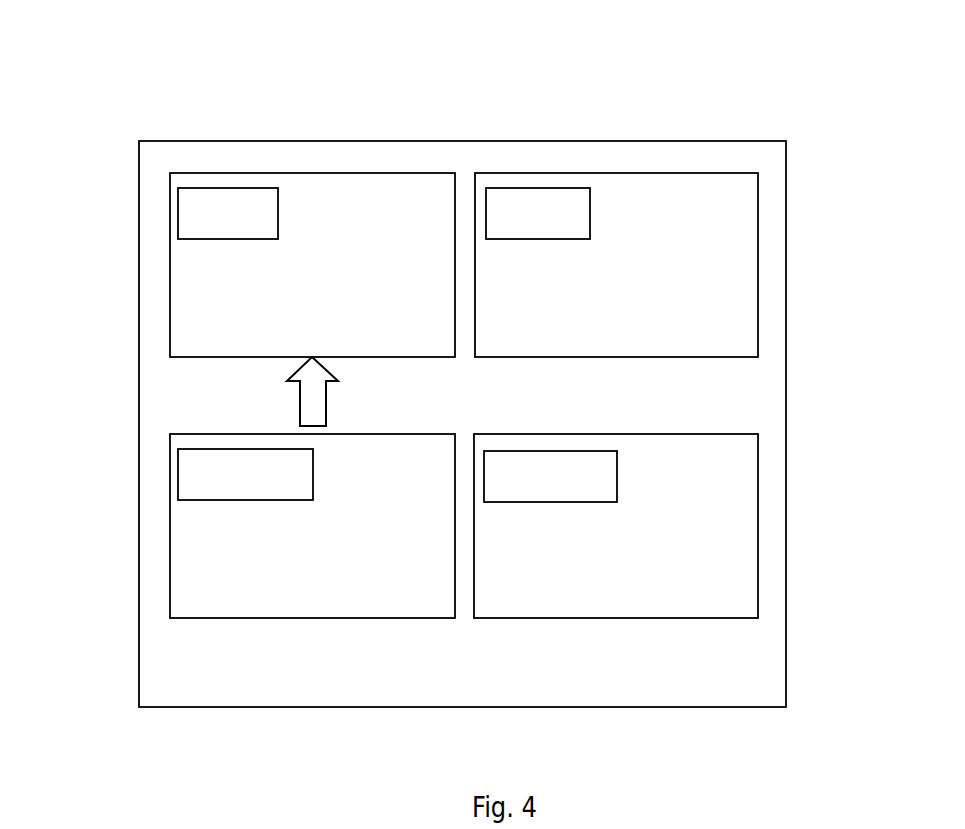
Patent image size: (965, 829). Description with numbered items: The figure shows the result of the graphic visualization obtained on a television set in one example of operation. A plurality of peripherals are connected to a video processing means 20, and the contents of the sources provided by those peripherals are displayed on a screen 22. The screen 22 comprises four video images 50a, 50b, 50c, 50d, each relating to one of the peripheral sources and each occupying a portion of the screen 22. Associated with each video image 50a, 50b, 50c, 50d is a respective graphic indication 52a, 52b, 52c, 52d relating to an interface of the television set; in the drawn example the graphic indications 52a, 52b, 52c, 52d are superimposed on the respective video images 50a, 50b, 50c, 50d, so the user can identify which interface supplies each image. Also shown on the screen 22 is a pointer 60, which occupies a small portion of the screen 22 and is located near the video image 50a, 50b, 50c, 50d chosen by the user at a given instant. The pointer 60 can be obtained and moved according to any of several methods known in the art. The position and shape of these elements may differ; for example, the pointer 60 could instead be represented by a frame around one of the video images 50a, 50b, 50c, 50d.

The video processing means 20 is at (507, 397).
The screen 22 is at (786, 423).
The video image 50a is at (326, 275).
The video image 50b is at (691, 263).
The video image 50c is at (357, 527).
The video image 50d is at (690, 527).
The graphic indication 52a is at (228, 188).
The graphic indication 52b is at (538, 188).
The graphic indication 52c is at (247, 500).
The graphic indication 52d is at (551, 502).
The pointer 60 is at (312, 392).